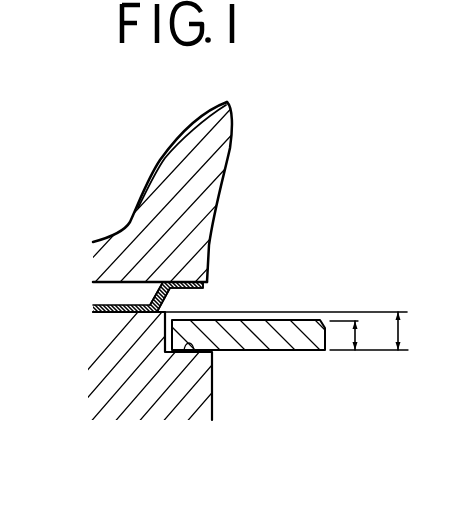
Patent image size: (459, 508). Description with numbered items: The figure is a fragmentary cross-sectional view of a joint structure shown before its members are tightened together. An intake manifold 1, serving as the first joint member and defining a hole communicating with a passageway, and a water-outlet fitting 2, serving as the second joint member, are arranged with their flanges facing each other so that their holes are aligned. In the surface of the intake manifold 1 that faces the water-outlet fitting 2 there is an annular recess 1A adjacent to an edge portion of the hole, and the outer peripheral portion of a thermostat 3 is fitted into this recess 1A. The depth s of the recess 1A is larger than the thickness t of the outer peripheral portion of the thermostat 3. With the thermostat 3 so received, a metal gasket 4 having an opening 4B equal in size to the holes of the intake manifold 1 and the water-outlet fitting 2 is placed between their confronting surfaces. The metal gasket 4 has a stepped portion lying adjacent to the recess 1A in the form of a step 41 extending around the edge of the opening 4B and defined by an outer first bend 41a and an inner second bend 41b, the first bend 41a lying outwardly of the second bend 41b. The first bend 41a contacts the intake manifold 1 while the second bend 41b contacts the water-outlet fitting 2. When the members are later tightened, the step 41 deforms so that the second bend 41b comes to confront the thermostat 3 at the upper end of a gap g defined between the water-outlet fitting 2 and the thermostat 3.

The intake manifold 1 is at (108, 348).
The annular recess 1A is at (187, 352).
The water-outlet fitting 2 is at (157, 185).
The thermostat 3 is at (288, 330).
The metal gasket 4 is at (100, 303).
The step 41 is at (152, 290).
The first bend 41a is at (162, 315).
The second bend 41b is at (218, 350).
The opening 4B is at (203, 284).
The gap g is at (200, 298).
The thickness t is at (369, 335).
The depth s is at (404, 331).